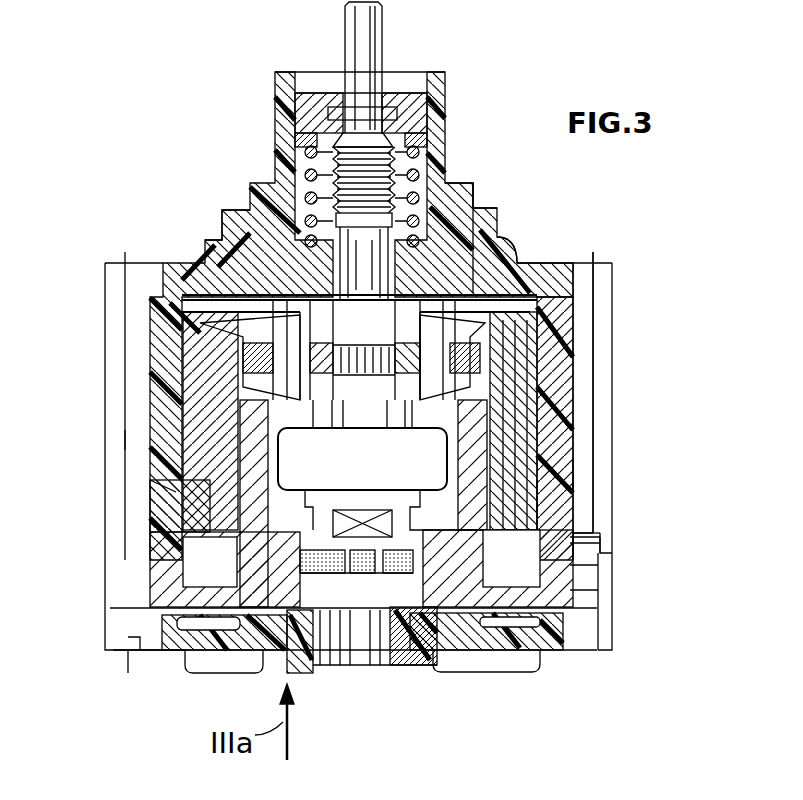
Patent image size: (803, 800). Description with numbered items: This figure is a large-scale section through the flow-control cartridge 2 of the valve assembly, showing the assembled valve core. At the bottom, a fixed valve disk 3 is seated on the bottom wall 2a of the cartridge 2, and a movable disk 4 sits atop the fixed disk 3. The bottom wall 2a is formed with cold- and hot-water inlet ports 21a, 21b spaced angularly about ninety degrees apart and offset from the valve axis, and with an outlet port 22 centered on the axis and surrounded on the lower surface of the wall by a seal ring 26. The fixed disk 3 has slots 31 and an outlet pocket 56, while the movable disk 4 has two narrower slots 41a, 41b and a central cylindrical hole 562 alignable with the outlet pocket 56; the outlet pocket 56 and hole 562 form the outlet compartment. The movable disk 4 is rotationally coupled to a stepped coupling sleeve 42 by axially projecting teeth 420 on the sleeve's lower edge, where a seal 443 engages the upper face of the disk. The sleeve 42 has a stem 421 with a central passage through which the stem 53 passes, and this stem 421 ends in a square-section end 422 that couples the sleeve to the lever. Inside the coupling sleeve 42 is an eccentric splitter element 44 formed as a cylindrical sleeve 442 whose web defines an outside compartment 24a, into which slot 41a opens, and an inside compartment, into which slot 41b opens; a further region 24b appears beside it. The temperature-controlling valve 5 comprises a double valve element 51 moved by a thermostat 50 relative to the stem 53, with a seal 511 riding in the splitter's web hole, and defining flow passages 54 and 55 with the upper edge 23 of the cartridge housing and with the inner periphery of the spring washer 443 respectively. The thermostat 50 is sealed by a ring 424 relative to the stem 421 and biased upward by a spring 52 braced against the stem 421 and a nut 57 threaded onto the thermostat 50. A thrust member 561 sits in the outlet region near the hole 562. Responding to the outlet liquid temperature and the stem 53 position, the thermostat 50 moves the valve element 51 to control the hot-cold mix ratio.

The stem 53 is at (383, 12).
The nut 57 is at (313, 100).
The square-section end 422 is at (447, 92).
The spring 52 is at (305, 165).
The ring 424 is at (222, 228).
The stem 421 is at (460, 197).
The thermostat 50 is at (380, 262).
The flow passage 55 is at (530, 263).
The upper edge 23 is at (563, 292).
The temperature-controlling valve 5 is at (560, 326).
The coupling sleeve 42 is at (570, 355).
The seal 511 is at (492, 380).
The cylindrical sleeve 442 is at (560, 408).
The cartridge 2 is at (600, 428).
The outside compartment 24a is at (570, 464).
The teeth 420 is at (530, 498).
The slot 41a is at (540, 528).
The movable disk 4 is at (575, 542).
The slots 31 is at (525, 568).
The fixed valve disk 3 is at (538, 610).
The bottom wall 2a is at (555, 640).
The hot-water inlet port 21b is at (533, 655).
The double valve element 51 is at (250, 372).
The flow passage 54 is at (245, 375).
The splitter element 44 is at (222, 398).
The casing wall portion 24b is at (125, 440).
The seal 443 is at (165, 467).
The slot 41b is at (176, 492).
The cylindrical hole 562 is at (240, 520).
The outlet pocket 56 is at (187, 593).
The cold-water inlet port 21a is at (213, 662).
The outlet port 22 is at (343, 673).
The thrust member 561 is at (383, 673).
The seal ring 26 is at (428, 673).